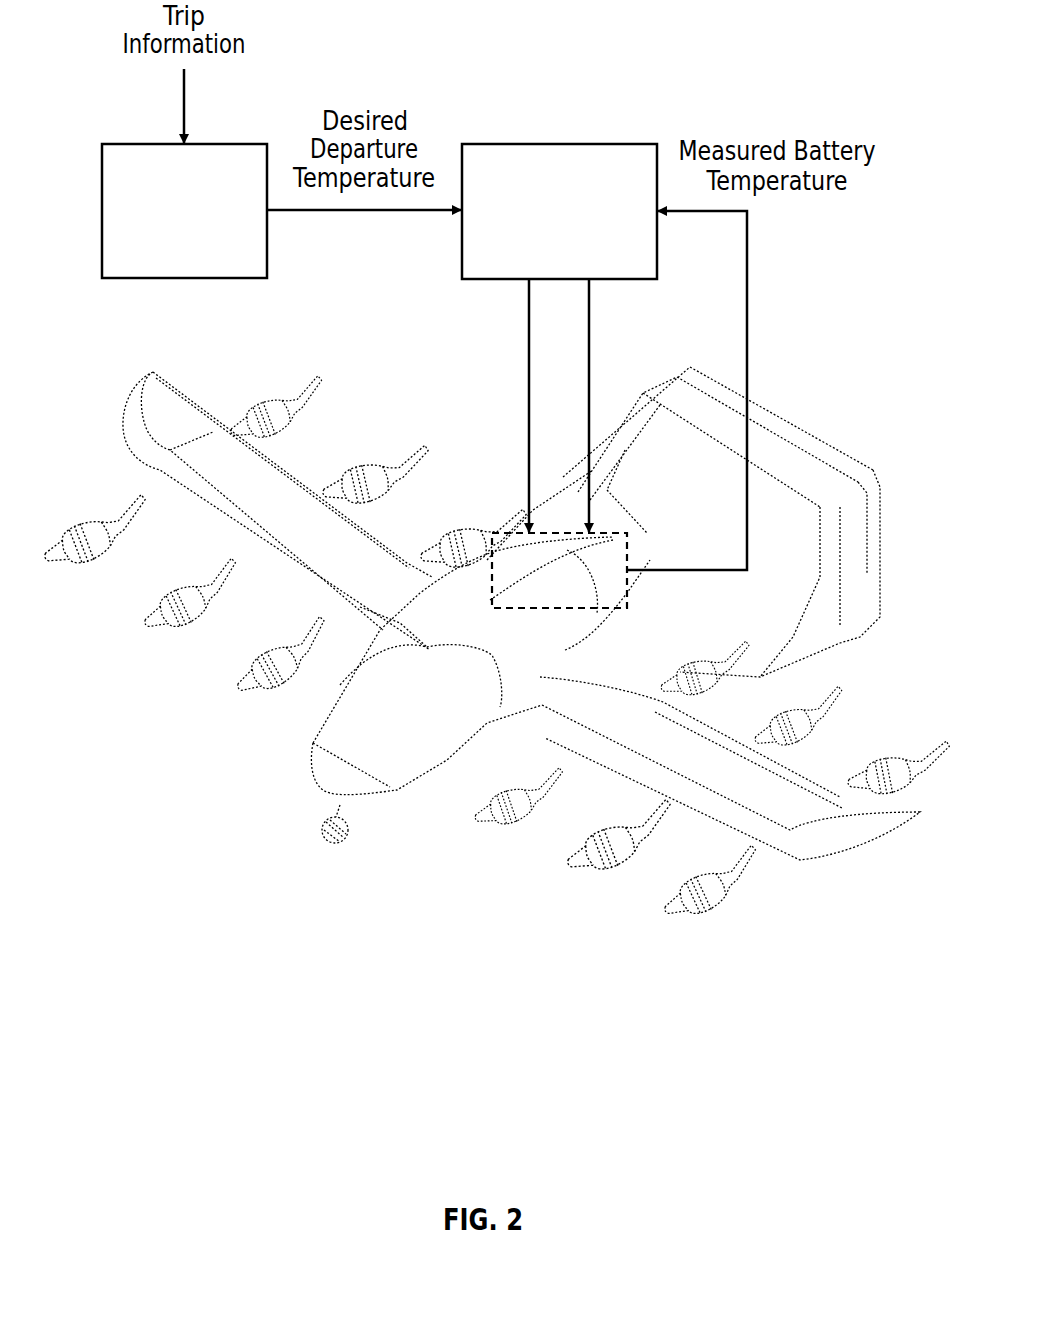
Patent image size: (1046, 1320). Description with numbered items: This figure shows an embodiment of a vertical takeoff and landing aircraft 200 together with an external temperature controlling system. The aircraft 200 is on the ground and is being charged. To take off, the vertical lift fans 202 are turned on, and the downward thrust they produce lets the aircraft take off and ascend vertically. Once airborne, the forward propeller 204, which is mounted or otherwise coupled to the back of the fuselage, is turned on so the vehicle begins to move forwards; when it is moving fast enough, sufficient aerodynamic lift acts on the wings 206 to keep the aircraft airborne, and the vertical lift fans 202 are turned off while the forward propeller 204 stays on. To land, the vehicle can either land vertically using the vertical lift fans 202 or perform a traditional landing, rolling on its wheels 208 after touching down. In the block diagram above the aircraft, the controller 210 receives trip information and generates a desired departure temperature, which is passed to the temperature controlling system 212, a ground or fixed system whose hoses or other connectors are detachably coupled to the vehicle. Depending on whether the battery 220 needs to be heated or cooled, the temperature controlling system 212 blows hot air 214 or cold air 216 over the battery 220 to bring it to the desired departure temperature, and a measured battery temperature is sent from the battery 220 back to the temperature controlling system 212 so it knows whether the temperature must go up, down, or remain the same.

The aircraft 200 is at (496, 629).
The vertical lift fans 202 is at (240, 677).
The forward propeller 204 is at (630, 571).
The wings 206 is at (140, 384).
The wheels 208 is at (350, 840).
The controller 210 is at (125, 142).
The temperature controlling system 212 is at (558, 142).
The hot air 214 is at (476, 405).
The cold air 216 is at (645, 405).
The battery 220 is at (560, 612).